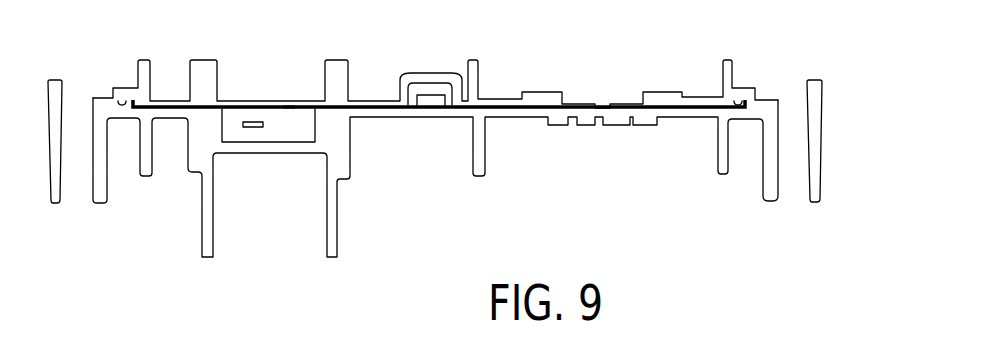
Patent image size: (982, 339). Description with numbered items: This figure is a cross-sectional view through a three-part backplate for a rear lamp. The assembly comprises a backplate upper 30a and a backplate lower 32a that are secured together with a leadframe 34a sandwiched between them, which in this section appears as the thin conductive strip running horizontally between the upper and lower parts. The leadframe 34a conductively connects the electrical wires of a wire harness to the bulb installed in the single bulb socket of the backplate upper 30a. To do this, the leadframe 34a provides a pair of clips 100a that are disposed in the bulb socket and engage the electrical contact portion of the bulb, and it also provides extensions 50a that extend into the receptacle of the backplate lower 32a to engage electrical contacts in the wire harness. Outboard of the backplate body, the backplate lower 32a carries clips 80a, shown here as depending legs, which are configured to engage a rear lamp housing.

The backplate upper 30a is at (501, 88).
The backplate lower 32a is at (377, 150).
The leadframe 34a is at (376, 97).
The extensions 50a is at (252, 122).
The clips 80a is at (86, 225).
The clips 100a is at (587, 80).